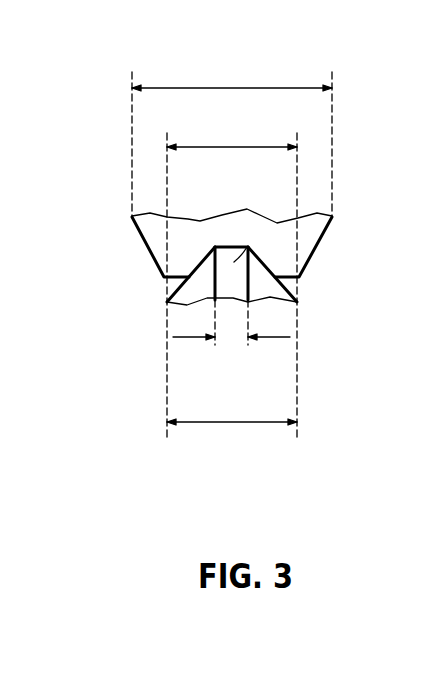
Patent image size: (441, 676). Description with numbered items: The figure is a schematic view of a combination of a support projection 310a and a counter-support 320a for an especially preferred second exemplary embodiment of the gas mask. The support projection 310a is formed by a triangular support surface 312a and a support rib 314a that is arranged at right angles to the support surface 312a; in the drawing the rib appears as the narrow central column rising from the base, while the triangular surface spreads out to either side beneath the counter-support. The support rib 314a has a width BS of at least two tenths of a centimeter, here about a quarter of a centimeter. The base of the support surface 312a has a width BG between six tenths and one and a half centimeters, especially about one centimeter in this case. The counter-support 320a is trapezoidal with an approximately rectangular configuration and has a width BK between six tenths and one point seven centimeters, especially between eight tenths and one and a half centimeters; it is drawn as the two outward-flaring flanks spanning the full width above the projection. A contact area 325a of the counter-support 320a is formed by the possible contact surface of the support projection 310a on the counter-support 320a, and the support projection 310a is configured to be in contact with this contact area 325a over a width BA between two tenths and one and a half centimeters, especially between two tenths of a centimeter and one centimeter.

The support projection 310a is at (173, 287).
The support surface 312a is at (265, 287).
The support rib 314a is at (246, 245).
The counter-support 320a is at (147, 242).
The contact area 325a is at (215, 246).
The width of counter-support BK is at (233, 87).
The contact width BA is at (237, 146).
The width of support rib BS is at (230, 339).
The width of base of support surface BG is at (230, 424).